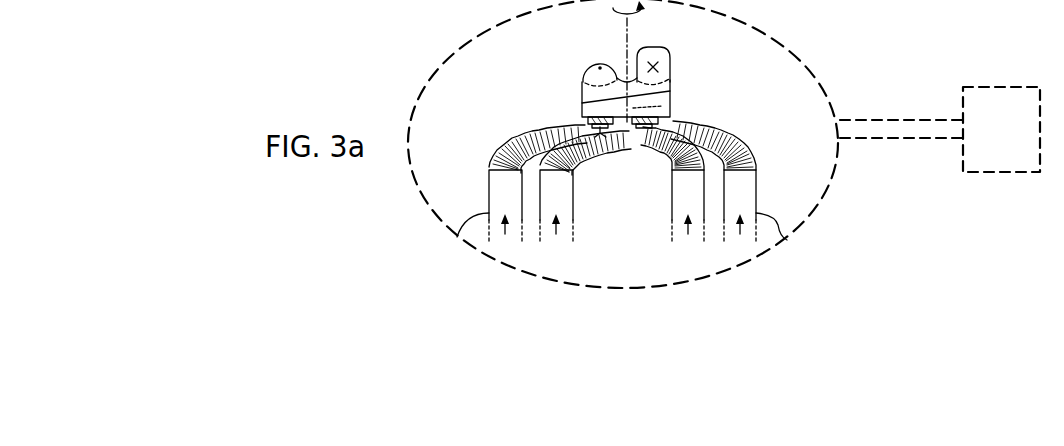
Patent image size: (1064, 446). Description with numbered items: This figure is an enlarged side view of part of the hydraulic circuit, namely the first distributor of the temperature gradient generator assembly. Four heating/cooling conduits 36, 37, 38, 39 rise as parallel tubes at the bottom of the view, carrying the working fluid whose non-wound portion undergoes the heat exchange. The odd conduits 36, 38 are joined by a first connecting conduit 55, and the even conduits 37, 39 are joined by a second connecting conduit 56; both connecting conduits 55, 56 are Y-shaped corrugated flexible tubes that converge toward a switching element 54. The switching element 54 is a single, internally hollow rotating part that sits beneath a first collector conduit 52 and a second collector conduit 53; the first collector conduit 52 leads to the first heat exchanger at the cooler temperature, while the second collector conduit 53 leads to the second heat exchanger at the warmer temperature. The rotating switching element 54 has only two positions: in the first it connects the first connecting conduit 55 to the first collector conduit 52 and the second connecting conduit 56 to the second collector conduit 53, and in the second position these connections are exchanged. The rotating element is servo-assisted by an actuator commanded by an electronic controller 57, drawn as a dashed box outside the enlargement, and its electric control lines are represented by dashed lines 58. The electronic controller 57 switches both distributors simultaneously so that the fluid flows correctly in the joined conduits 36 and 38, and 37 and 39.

The heating/cooling conduit 36 is at (787, 240).
The heating/cooling conduit 37 is at (670, 223).
The heating/cooling conduit 38 is at (570, 233).
The heating/cooling conduit 39 is at (457, 237).
The first collector conduit 52 is at (587, 55).
The second collector conduit 53 is at (670, 58).
The switching element 54 is at (582, 107).
The first connecting conduit 55 is at (525, 130).
The second connecting conduit 56 is at (733, 146).
The electronic controller 57 is at (990, 88).
The dashed lines 58 is at (872, 120).